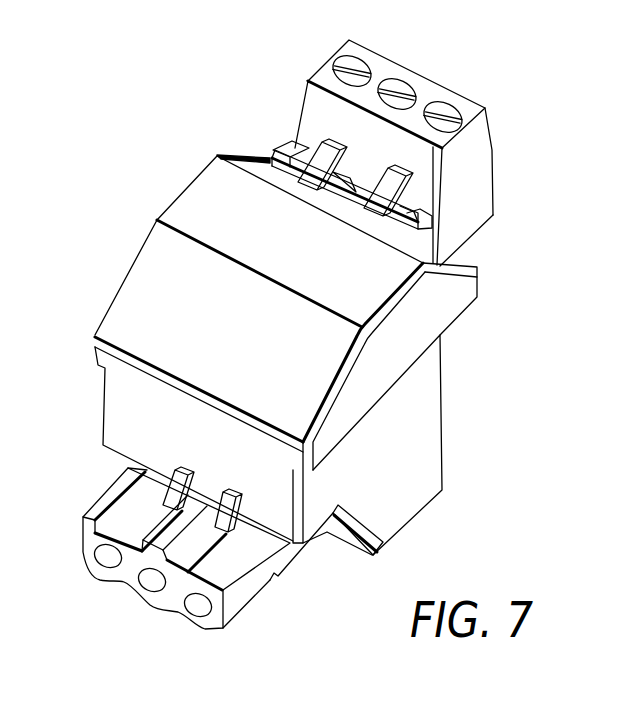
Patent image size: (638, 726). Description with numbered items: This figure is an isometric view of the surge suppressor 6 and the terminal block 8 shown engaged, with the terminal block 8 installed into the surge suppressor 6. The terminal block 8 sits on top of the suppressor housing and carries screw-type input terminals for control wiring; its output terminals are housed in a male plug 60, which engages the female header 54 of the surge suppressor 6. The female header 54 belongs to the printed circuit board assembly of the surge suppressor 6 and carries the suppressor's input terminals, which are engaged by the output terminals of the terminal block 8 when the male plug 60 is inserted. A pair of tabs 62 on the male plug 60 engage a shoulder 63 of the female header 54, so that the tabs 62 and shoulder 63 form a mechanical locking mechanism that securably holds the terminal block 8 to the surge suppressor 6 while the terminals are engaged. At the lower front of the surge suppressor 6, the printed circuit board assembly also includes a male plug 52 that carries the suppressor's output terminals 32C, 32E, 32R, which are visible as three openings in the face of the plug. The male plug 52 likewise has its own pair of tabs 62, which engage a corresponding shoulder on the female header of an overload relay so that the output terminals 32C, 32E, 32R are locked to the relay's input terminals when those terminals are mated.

The terminal block 8 is at (430, 81).
The female header 54 is at (245, 146).
The shoulder 63 is at (400, 233).
The male plug 60 is at (448, 223).
The tabs 62 is at (366, 210).
The surge suppressor 6 is at (442, 449).
The male plug 52 is at (103, 493).
The output terminal 32R is at (103, 560).
The output terminal 32E is at (152, 584).
The output terminal 32C is at (200, 617).